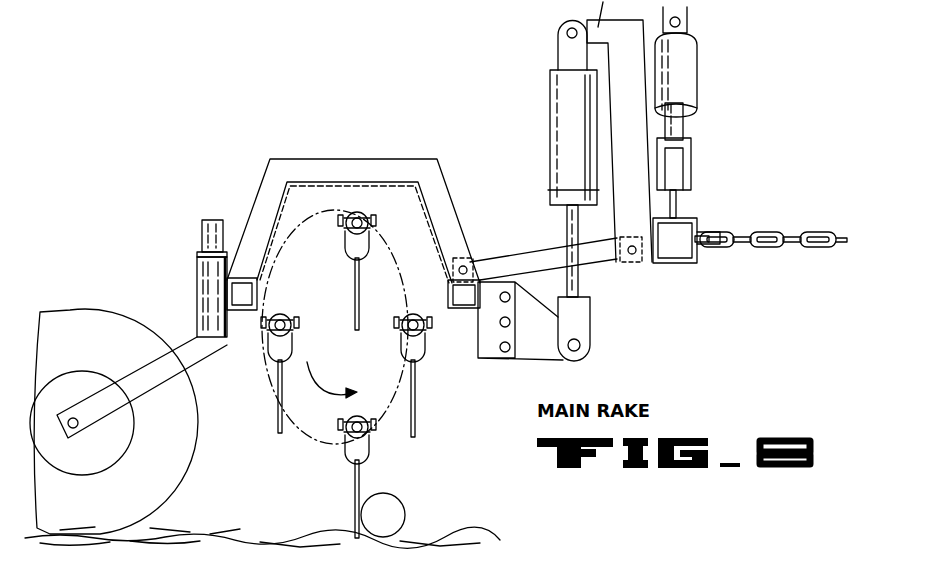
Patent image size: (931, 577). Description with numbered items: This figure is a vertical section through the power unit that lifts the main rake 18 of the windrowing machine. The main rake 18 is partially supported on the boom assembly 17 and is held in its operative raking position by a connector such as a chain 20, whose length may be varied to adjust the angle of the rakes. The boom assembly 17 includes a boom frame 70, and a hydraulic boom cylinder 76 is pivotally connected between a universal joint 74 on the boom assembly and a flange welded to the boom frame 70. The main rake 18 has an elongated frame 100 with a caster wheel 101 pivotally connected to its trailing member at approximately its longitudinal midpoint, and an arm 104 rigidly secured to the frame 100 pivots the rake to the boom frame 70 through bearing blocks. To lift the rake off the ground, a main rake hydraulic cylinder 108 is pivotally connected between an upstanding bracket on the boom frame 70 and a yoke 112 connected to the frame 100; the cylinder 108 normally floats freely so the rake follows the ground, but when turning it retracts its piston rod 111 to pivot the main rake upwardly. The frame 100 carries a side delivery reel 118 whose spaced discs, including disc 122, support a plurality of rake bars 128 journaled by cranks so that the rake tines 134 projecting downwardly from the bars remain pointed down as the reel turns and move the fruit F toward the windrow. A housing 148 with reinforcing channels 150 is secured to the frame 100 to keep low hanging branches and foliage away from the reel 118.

The caster wheel 101 is at (77, 312).
The housing 148 is at (277, 212).
The main rake 18 is at (353, 179).
The reinforcing channels 150 is at (305, 163).
The elongated frame 100 is at (450, 303).
The arm 104 is at (518, 258).
The reel 118 is at (430, 358).
The main rake hydraulic cylinder 108 is at (557, 89).
The piston rod 111 is at (567, 213).
The yoke 112 is at (540, 358).
The universal joint 74 is at (687, 13).
The hydraulic boom cylinder 76 is at (697, 57).
The boom frame 70 is at (616, 264).
The boom assembly 17 is at (700, 217).
The chain 20 is at (763, 232).
The rake bars 128 is at (344, 238).
The rake tines 134 is at (328, 467).
The disc 122 is at (400, 438).
The citrus fruit F is at (405, 499).